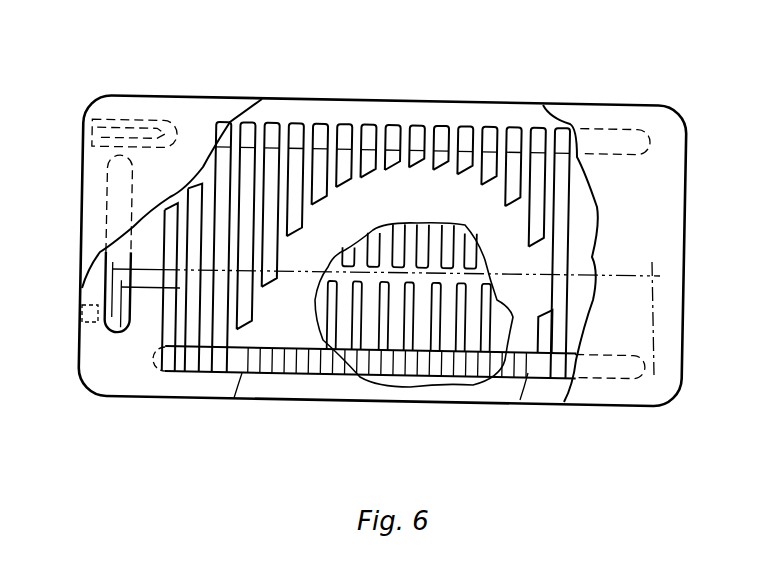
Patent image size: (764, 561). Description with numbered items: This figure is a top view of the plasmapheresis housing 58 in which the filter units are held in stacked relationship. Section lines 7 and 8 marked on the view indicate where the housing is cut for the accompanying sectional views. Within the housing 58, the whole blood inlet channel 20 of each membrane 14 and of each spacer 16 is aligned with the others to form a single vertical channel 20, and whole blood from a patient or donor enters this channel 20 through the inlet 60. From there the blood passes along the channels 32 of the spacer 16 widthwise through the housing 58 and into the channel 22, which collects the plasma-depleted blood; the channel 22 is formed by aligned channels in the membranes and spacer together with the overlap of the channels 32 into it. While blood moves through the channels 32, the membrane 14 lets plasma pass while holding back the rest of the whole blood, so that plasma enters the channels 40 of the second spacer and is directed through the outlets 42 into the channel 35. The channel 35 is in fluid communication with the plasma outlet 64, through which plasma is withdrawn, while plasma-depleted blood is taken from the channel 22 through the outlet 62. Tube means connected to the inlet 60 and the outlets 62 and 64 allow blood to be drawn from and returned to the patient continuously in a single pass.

The section line 7- 7 is at (36, 250).
The section line 8- 8 is at (179, 207).
The membrane 14 is at (537, 298).
The spacer 16 is at (577, 233).
The whole blood inlet channel 20 is at (414, 358).
The channel 22 is at (473, 133).
The channels 32 is at (540, 176).
The channel 35 is at (105, 250).
The channels 40 is at (386, 243).
The outlets 42 is at (422, 278).
The housing 58 is at (666, 210).
The inlet 60 is at (650, 352).
The outlet 62 is at (92, 122).
The plasma outlet 64 is at (85, 312).